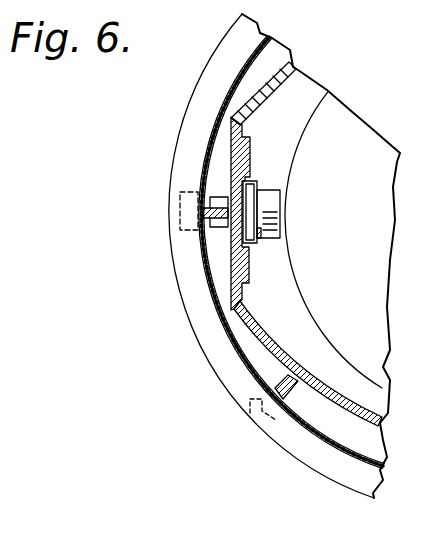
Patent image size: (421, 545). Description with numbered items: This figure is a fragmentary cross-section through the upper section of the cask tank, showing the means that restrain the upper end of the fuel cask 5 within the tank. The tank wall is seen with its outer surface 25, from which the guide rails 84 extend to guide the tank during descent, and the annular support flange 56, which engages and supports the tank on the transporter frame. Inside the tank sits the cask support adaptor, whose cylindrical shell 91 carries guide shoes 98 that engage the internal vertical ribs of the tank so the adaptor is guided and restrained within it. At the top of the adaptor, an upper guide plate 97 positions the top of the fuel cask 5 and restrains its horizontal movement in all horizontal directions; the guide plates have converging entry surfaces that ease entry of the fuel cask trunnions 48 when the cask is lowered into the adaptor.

The fuel cask 5 is at (304, 296).
The outer surface of the tank 25 is at (214, 143).
The fuel cask trunnions 48 is at (268, 213).
The annular support flange 56 is at (186, 111).
The guide rails 84 is at (250, 413).
The cylindrical shell 91 is at (351, 414).
The upper guide plates 97 is at (252, 167).
The lower guide shoes 98 is at (207, 233).